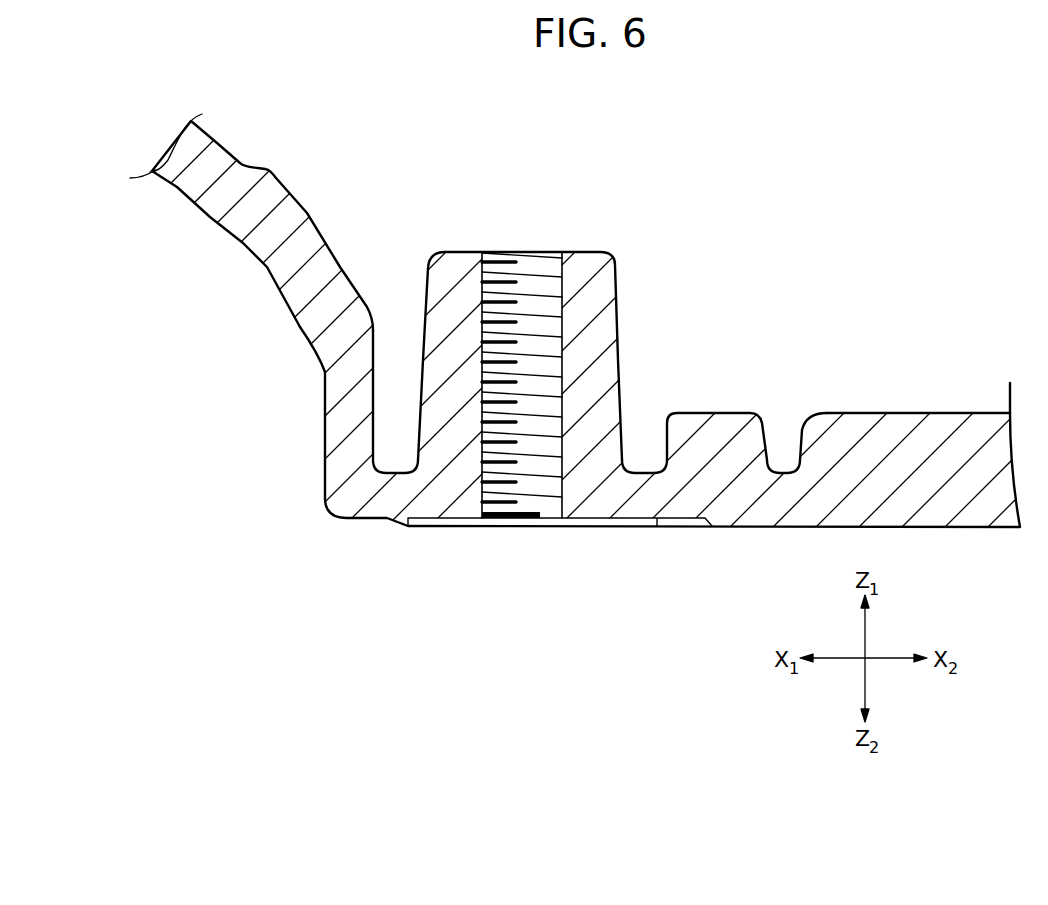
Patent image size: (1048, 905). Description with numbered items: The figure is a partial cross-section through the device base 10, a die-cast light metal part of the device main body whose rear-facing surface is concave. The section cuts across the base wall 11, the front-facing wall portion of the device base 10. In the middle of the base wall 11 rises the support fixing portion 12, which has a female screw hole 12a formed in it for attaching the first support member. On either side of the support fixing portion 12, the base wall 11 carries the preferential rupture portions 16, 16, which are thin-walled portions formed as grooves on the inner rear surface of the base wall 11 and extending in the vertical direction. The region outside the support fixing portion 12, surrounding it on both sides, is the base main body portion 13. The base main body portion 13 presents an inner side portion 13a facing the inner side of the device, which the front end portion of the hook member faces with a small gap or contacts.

The device base 10 is at (938, 527).
The base wall 11 is at (223, 158).
The support fixing portion 12 is at (617, 233).
The female screw hole 12a is at (533, 502).
The base main body portion 13 is at (114, 176).
The inner side portion 13a is at (897, 412).
The preferential rupture portion 16 is at (387, 497).